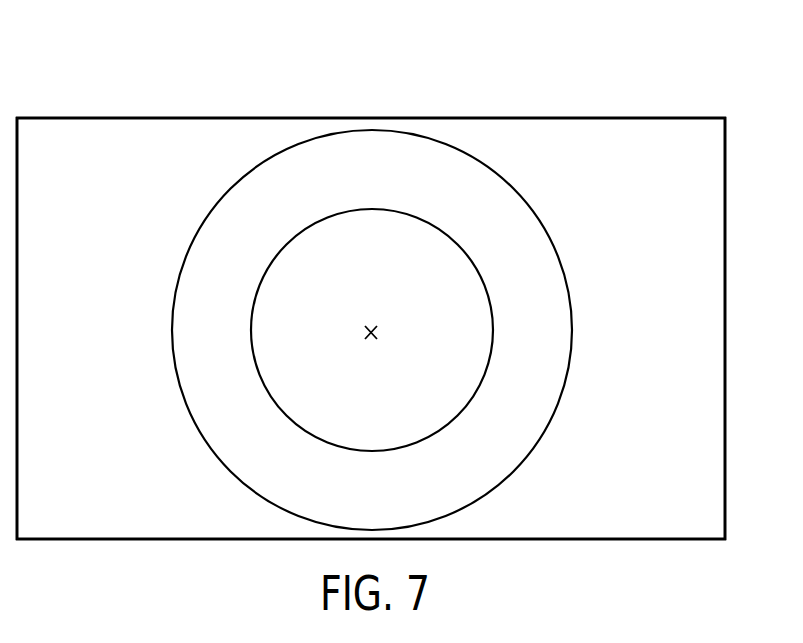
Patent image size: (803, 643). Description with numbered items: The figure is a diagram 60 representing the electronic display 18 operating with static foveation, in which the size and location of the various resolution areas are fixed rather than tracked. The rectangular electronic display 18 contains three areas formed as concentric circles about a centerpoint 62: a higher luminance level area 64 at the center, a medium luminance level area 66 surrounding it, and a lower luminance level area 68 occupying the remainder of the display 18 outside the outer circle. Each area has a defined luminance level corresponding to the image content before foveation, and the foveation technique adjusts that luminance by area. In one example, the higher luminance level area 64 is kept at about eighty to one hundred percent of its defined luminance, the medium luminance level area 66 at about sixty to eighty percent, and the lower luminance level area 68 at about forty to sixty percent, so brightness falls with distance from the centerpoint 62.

The diagram 60 is at (599, 105).
The electronic display 18 is at (205, 118).
The lower luminance level area 68 is at (660, 200).
The medium luminance level area 66 is at (231, 186).
The higher luminance level area 64 is at (258, 283).
The centerpoint 62 is at (366, 334).